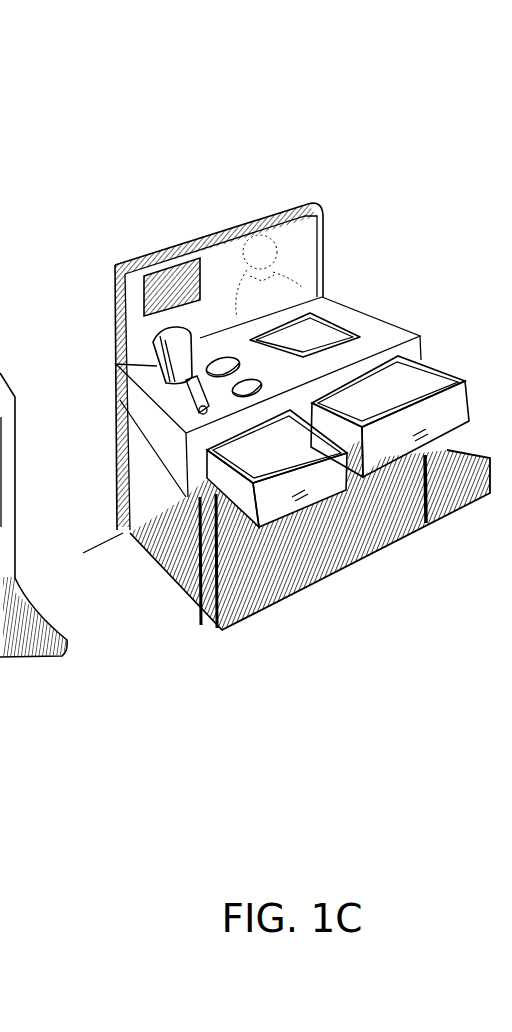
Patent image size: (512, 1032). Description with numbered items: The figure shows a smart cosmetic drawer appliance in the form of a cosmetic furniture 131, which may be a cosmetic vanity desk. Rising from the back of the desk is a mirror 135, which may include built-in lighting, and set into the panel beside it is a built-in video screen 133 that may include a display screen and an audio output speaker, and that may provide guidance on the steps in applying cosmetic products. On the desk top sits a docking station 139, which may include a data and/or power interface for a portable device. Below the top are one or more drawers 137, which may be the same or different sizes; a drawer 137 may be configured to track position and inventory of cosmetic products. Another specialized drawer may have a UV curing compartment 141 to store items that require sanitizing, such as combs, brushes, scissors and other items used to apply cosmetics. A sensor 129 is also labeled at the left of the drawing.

The sensor 129 is at (33, 436).
The cosmetic furniture 131 is at (217, 232).
The built-in video screen 133 is at (163, 267).
The mirror 135 is at (300, 222).
The drawers 137 is at (380, 382).
The docking station 139 is at (142, 363).
The UV curing compartment 141 is at (295, 593).